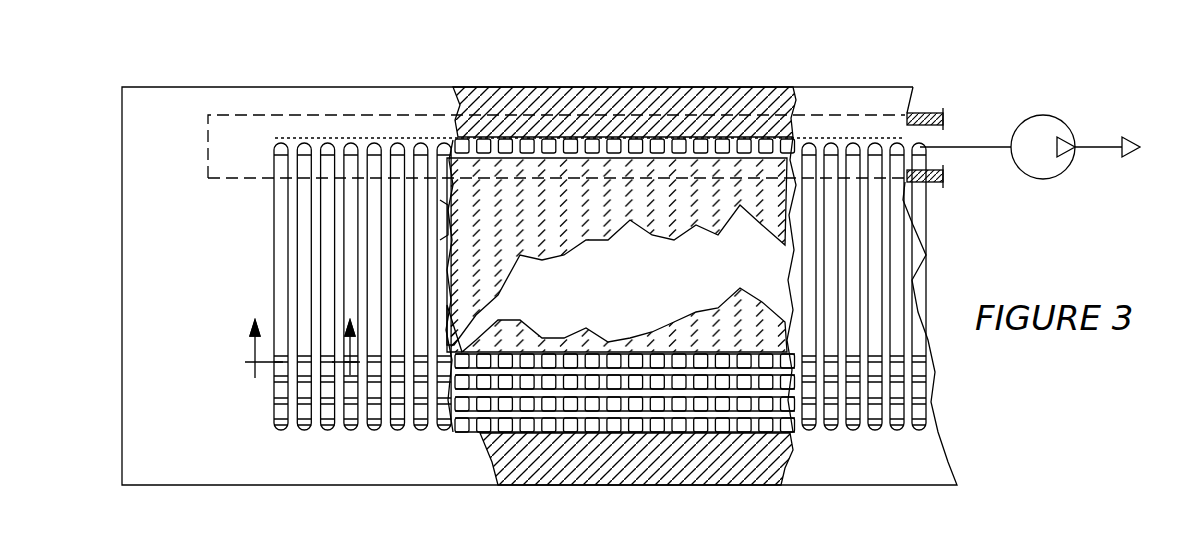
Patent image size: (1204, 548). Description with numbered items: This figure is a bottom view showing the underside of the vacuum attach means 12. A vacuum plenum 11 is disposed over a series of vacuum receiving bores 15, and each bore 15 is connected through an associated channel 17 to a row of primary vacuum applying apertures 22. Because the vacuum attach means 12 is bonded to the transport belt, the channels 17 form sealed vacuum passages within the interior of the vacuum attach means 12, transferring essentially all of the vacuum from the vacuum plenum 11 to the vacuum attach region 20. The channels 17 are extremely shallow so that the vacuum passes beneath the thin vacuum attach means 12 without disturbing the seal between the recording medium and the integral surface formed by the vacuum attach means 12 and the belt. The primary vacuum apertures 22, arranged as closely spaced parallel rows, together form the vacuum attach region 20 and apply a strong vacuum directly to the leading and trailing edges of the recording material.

The vacuum plenum 11 is at (208, 147).
The vacuum attach means 12 is at (338, 87).
The vacuum receiving bores 15 is at (597, 147).
The channels 17 is at (283, 233).
The vacuum attach region 20 is at (245, 409).
The primary vacuum applying apertures 22 is at (324, 428).